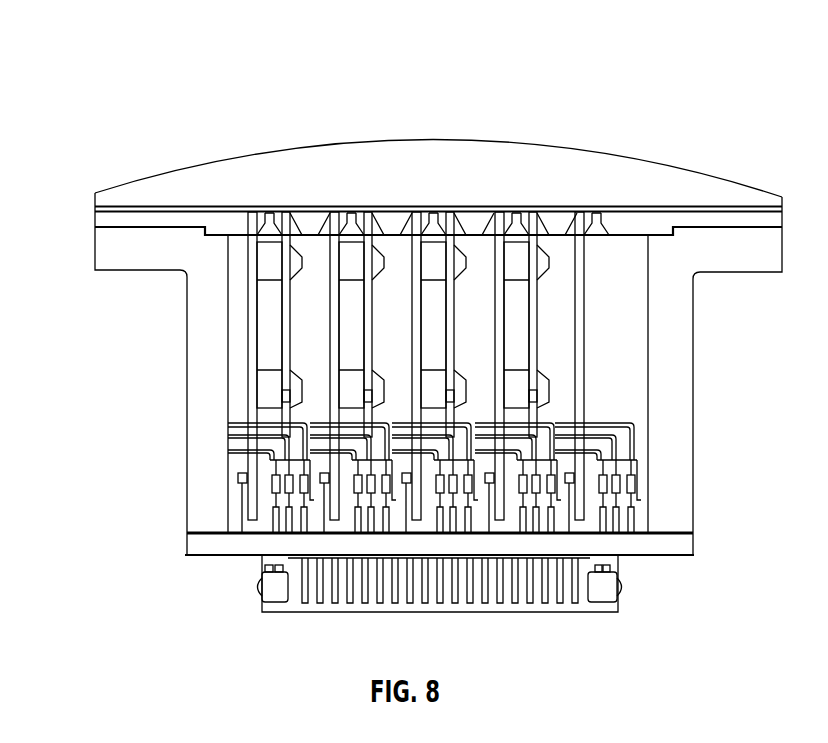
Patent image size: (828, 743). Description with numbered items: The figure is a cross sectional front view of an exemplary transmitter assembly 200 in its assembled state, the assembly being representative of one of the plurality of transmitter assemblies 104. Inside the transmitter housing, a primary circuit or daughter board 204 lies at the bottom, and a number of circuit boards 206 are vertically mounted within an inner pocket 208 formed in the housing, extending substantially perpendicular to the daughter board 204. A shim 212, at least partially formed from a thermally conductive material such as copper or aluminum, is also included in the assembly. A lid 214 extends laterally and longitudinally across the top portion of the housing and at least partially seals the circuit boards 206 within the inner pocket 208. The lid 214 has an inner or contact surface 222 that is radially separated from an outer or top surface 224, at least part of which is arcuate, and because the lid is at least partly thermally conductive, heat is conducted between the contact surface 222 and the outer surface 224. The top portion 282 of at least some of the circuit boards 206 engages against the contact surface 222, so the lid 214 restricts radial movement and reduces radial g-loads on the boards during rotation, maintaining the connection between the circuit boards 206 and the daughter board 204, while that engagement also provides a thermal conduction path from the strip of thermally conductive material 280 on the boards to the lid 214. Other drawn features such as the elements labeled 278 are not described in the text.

The transmitter assembly 104 is at (700, 133).
The transmitter assembly 200 is at (661, 108).
The daughter board 204 is at (225, 542).
The circuit board 206 is at (582, 351).
The inner pocket 208 is at (307, 408).
The shim 212 is at (385, 205).
The lid 214 is at (126, 168).
The contact surface 222 is at (113, 205).
The outer surface 224 is at (180, 171).
The light emitting diodes 278 is at (262, 208).
The strip of thermally conductive material 280 is at (533, 205).
The top portion 282 is at (270, 229).